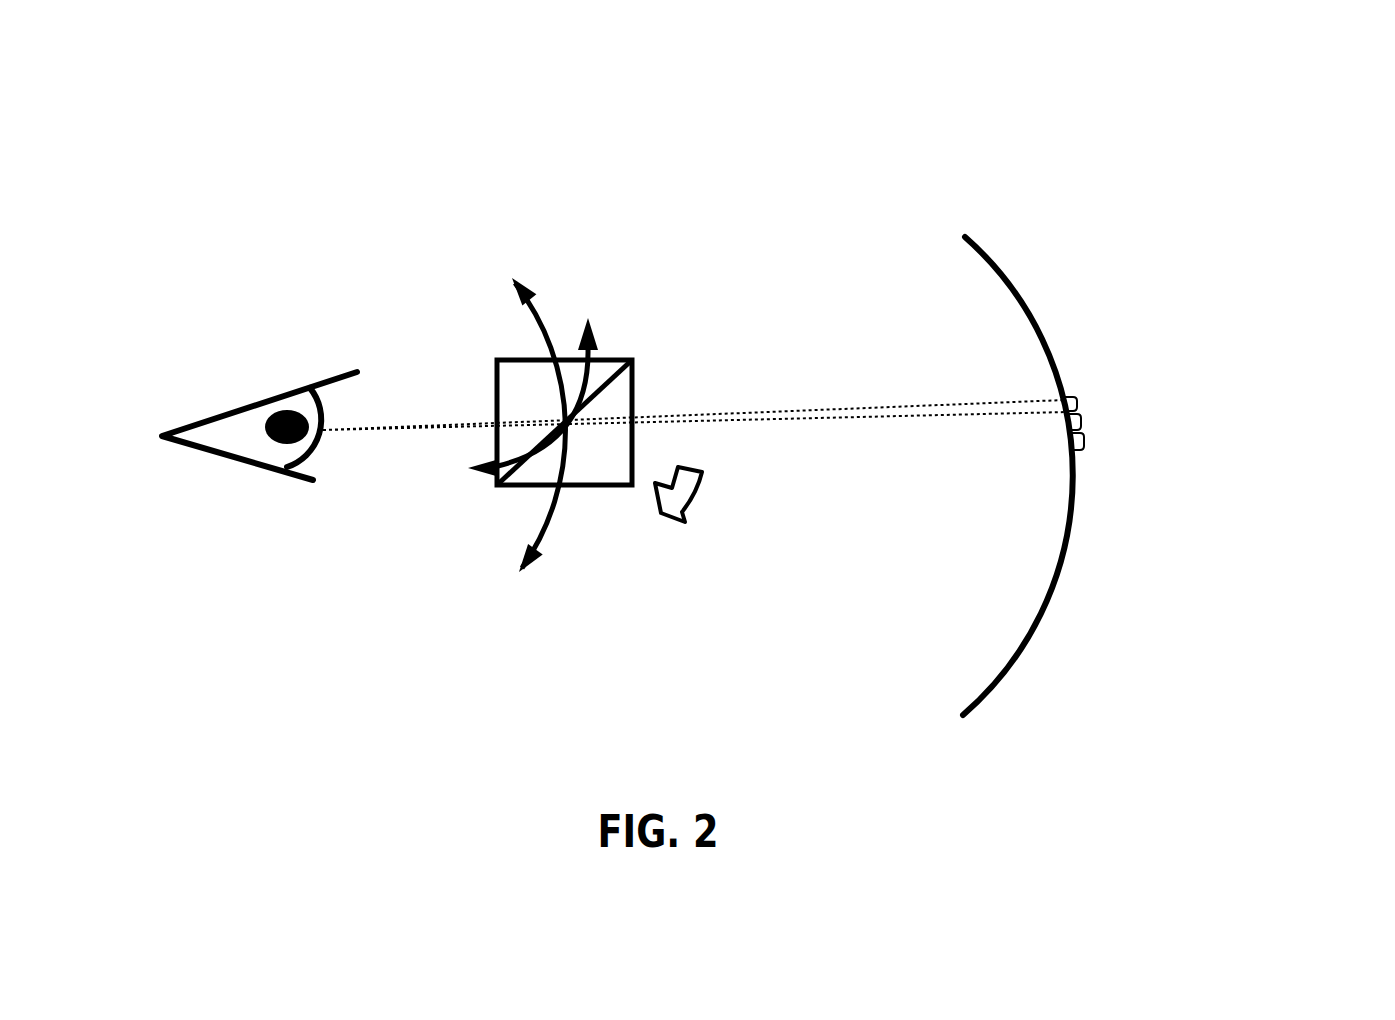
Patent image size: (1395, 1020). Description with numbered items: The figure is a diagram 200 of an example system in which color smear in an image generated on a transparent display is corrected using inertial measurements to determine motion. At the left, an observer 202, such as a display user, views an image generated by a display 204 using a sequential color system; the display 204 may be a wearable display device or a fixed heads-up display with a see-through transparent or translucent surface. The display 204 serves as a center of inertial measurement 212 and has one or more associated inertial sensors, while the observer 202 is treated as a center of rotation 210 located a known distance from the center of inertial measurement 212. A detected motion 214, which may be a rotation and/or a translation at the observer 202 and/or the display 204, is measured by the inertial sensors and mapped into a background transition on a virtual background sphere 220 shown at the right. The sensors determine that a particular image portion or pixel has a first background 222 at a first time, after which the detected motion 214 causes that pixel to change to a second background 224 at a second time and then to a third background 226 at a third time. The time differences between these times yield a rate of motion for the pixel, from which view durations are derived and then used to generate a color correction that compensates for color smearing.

The diagram 200 is at (257, 130).
The observer 202 is at (198, 356).
The display 204 is at (713, 304).
The center of rotation 210 is at (210, 516).
The center of inertial measurement 212 is at (537, 178).
The detected motion 214 is at (658, 564).
The virtual background sphere 220 is at (900, 148).
The first background 222 is at (1162, 302).
The second background 224 is at (1162, 408).
The third background 226 is at (1085, 448).